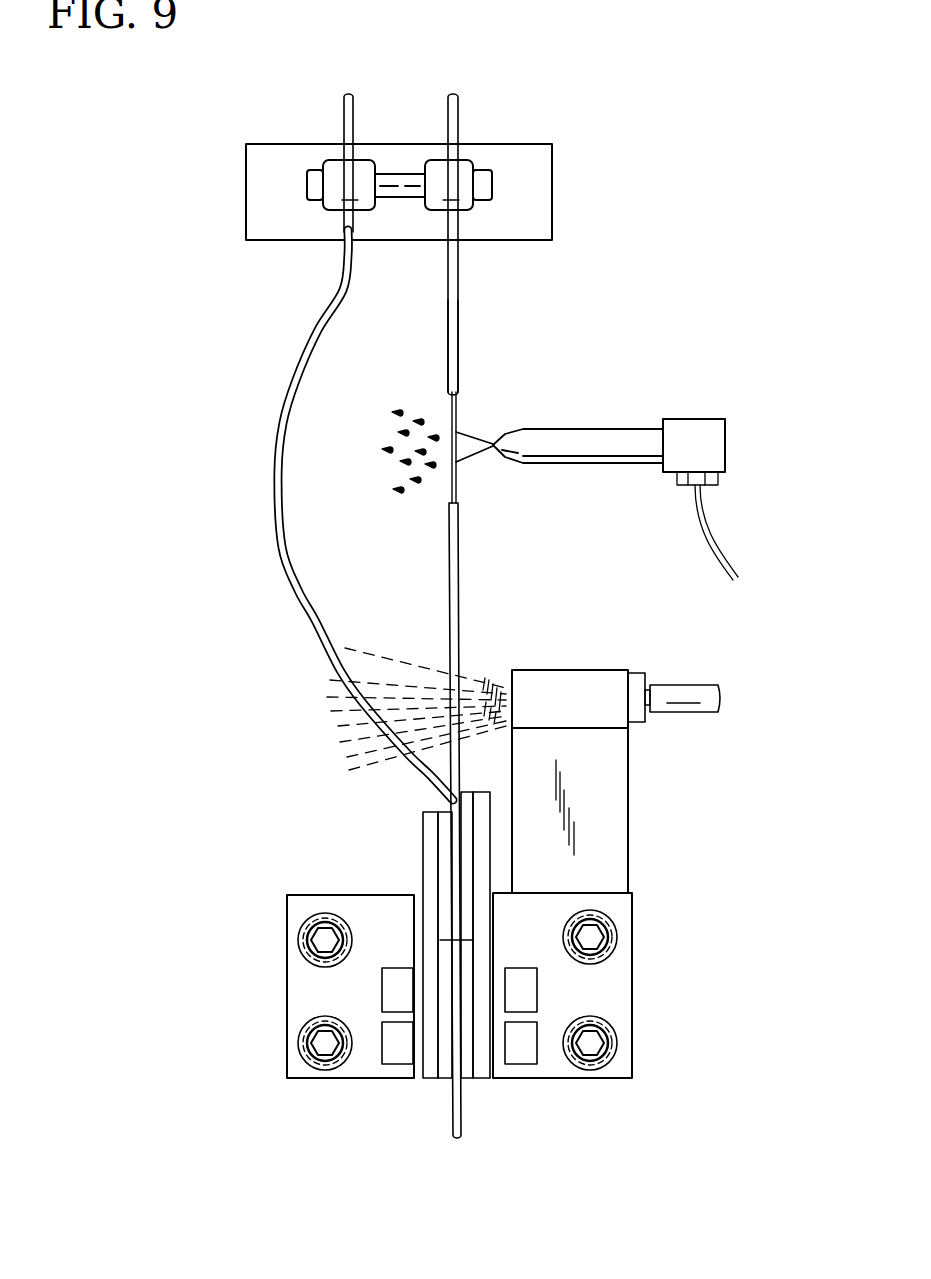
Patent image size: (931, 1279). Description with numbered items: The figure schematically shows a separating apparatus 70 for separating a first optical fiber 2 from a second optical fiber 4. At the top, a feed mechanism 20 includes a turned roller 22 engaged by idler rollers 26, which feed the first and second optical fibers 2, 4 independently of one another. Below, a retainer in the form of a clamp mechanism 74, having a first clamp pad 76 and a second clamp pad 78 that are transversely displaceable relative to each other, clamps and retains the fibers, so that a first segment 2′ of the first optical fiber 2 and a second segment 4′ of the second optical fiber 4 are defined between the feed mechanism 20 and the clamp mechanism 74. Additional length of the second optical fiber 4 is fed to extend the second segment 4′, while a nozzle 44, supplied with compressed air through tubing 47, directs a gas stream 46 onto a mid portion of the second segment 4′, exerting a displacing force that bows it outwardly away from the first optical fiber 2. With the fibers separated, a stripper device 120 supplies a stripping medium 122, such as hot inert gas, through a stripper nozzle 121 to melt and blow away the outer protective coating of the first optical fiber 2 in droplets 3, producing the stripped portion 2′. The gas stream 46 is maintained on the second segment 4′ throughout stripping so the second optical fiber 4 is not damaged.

The separating apparatus 70 is at (658, 106).
The feed mechanism 20 is at (545, 170).
The second optical fiber 4 is at (343, 110).
The first optical fiber 2 is at (456, 112).
The idler rollers 26 is at (342, 207).
The turned roller 22 is at (400, 187).
The second segment 4′ is at (323, 331).
The first segment 2′ is at (459, 329).
The droplets 3 is at (400, 463).
The stripping medium 122 is at (473, 464).
The stripper nozzle 121 is at (605, 466).
The stripper device 120 is at (703, 408).
The nozzle 44 is at (570, 670).
The tubing 47 is at (695, 684).
The gas stream 46 is at (347, 717).
The first clamp pad 76 is at (468, 805).
The second clamp pad 78 is at (443, 860).
The clamp mechanism 74 is at (400, 883).